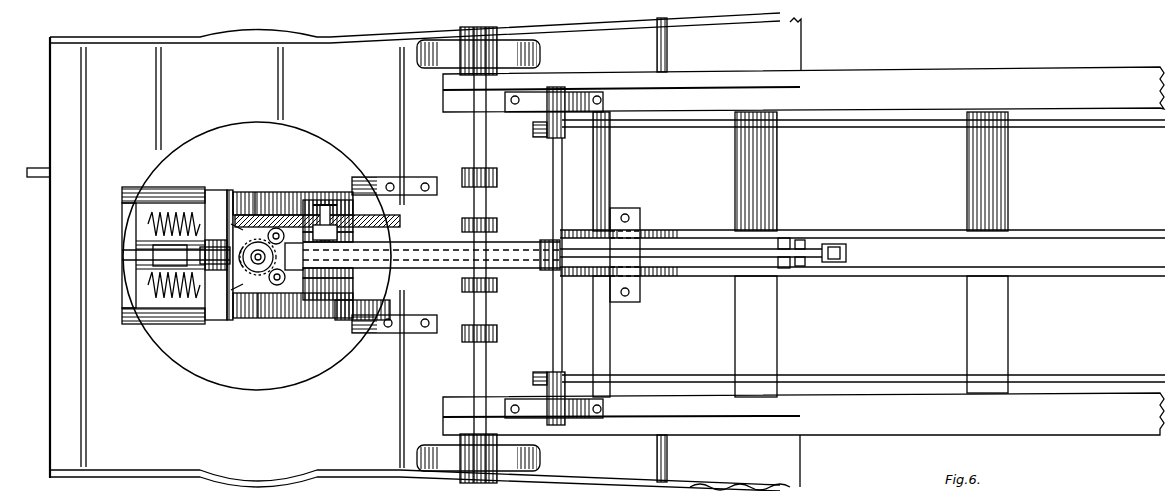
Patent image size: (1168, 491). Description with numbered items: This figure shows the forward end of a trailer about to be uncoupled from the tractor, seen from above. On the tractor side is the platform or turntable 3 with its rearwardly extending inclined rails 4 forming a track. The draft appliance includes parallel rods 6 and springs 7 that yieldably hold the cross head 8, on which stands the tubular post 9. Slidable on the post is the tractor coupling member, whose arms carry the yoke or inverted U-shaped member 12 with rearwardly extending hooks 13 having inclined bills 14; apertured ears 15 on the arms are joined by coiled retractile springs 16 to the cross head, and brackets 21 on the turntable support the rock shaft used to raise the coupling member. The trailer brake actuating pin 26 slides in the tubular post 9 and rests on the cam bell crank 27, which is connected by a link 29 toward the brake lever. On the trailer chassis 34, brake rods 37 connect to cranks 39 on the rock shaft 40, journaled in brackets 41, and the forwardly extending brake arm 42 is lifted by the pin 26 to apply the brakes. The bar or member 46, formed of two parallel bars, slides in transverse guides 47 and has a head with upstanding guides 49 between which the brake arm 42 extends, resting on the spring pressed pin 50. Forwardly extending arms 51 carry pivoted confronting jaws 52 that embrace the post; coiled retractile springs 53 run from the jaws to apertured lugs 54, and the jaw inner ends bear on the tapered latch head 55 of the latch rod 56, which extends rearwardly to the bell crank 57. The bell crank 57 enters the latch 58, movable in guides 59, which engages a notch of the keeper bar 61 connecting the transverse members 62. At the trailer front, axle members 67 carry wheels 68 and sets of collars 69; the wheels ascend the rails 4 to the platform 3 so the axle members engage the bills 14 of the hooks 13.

The platform or turntable 3 is at (403, 252).
The inclined rails 4 is at (729, 254).
The parallel rods 6 is at (180, 300).
The springs 7 is at (170, 290).
The cross head 8 is at (216, 271).
The tubular post 9 is at (238, 317).
The yoke or inverted U-shaped member 12 is at (224, 204).
The hooks 13 is at (260, 276).
The inclined bills 14 is at (356, 310).
The apertured ears 15 is at (258, 318).
The coiled retractile springs 16 is at (256, 191).
The brackets 21 is at (415, 183).
The trailer brake actuating pin 26 is at (233, 292).
The cam bell crank 27 is at (129, 298).
The link 29 is at (193, 188).
The trailer chassis 34 is at (1043, 73).
The set of rods 37 is at (889, 126).
The cranks 39 is at (534, 132).
The rock shaft 40 is at (562, 195).
The brackets 41 is at (576, 92).
The brake arm 42 is at (510, 242).
The bar or member 46 is at (1093, 267).
The transverse guides 47 is at (618, 275).
The upstanding guides 49 is at (343, 224).
The spring pressed pin 50 is at (330, 205).
The forwardly extending arms 51 is at (312, 201).
The confronting jaws 52 is at (274, 228).
The coiled retractile springs 53 is at (248, 228).
The apertured lugs 54 is at (288, 240).
The tapered latch head 55 is at (316, 300).
The latch rod 56 is at (674, 249).
The bell crank 57 is at (847, 253).
The latch 58 is at (785, 238).
The guides 59 is at (800, 240).
The keeper bar 61 is at (902, 230).
The transverse members 62 is at (800, 254).
The axle members 67 is at (473, 129).
The wheels 68 is at (542, 45).
The collars 69 is at (462, 168).